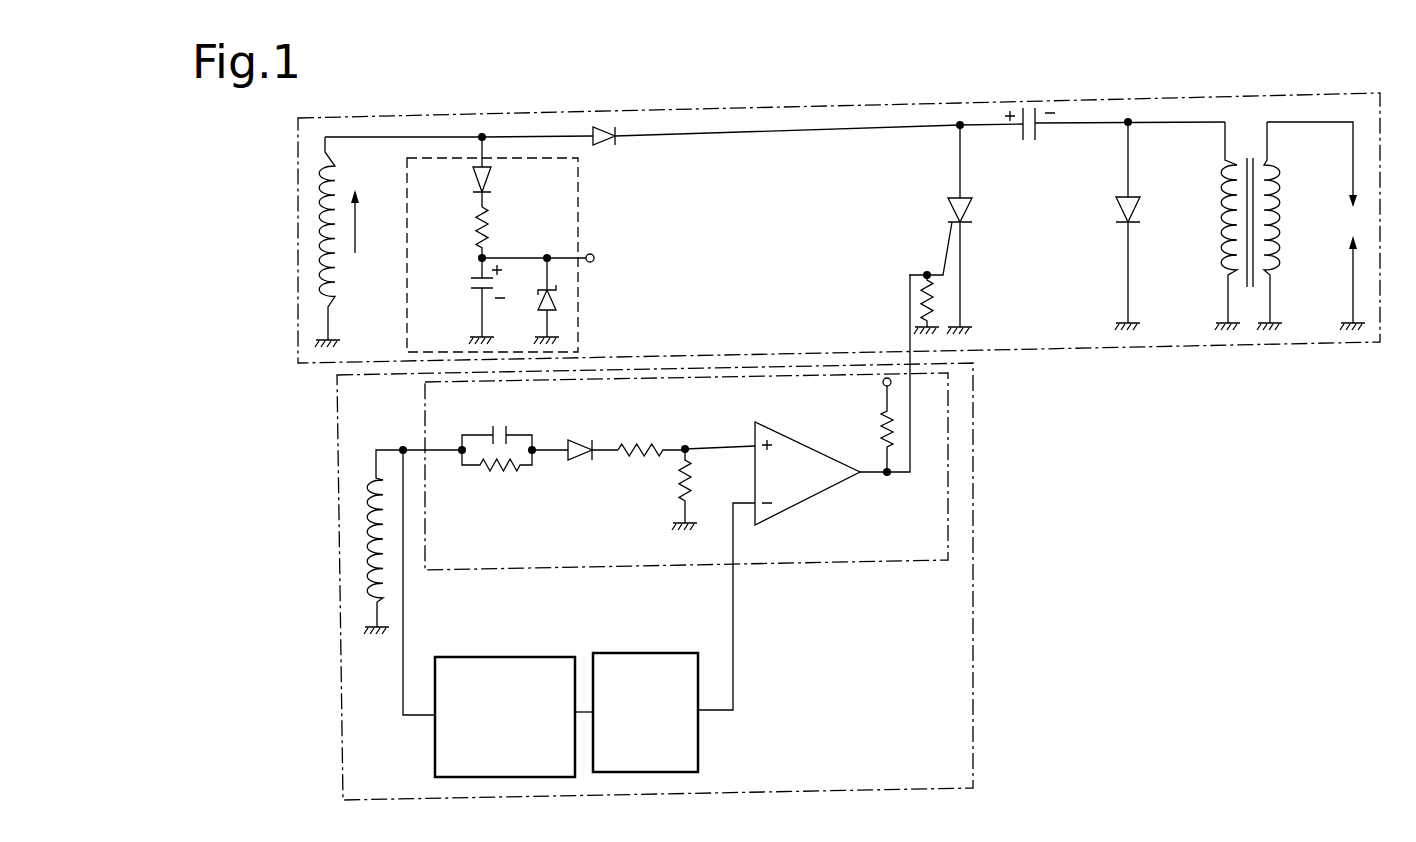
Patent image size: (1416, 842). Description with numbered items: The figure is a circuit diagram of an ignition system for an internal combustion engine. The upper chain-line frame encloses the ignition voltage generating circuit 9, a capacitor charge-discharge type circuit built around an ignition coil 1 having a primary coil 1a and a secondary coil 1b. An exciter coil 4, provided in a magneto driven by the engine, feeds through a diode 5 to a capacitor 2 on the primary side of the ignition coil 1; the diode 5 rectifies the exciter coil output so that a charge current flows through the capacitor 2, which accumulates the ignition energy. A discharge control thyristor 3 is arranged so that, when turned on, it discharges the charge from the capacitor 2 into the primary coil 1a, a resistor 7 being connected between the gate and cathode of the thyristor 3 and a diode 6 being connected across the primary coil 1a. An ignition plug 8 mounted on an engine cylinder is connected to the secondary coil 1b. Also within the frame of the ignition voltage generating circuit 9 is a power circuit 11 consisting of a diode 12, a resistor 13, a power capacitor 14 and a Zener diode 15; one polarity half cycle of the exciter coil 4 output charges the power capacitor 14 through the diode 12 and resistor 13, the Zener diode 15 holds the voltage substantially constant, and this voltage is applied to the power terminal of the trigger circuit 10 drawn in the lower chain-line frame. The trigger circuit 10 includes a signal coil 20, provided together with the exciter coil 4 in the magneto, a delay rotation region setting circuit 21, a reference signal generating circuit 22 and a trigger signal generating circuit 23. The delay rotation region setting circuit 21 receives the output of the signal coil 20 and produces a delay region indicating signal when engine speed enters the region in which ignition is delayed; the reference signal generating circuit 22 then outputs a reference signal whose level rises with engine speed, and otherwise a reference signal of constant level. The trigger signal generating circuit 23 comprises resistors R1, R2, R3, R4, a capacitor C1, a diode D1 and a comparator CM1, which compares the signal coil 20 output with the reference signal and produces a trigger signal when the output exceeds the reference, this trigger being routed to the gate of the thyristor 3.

The ignition coil 1 is at (1244, 192).
The primary coil 1a is at (1218, 178).
The secondary coil 1b is at (1281, 174).
The capacitor 2 is at (1026, 106).
The discharge control thyristor 3 is at (973, 208).
The exciter coil 4 is at (326, 170).
The diode 5 is at (601, 128).
The diode 6 is at (1123, 197).
The resistor 7 is at (919, 296).
The ignition plug 8 is at (1356, 222).
The ignition voltage generating circuit 9 is at (919, 100).
The trigger circuit 10 is at (982, 613).
The power circuit 11 is at (454, 152).
The diode 12 is at (473, 186).
The resistor 13 is at (492, 227).
The power capacitor 14 is at (476, 291).
The Zener diode 15 is at (557, 291).
The signal coil 20 is at (365, 549).
The delay rotation region setting circuit 21 is at (500, 657).
The reference signal generating circuit 22 is at (655, 655).
The trigger signal generating circuit 23 is at (956, 502).
The capacitor C1 is at (508, 428).
The resistor R1 is at (490, 471).
The resistor R2 is at (640, 456).
The resistor R3 is at (692, 483).
The resistor R4 is at (884, 421).
The diode D1 is at (584, 440).
The comparator CM1 is at (812, 493).